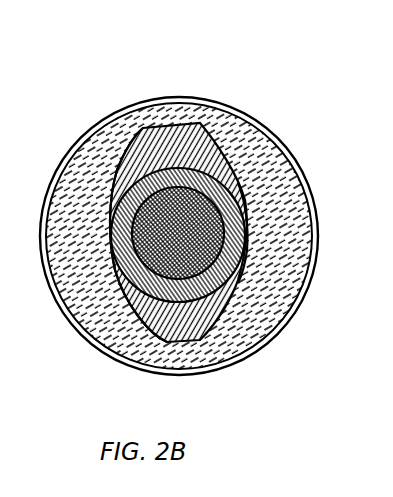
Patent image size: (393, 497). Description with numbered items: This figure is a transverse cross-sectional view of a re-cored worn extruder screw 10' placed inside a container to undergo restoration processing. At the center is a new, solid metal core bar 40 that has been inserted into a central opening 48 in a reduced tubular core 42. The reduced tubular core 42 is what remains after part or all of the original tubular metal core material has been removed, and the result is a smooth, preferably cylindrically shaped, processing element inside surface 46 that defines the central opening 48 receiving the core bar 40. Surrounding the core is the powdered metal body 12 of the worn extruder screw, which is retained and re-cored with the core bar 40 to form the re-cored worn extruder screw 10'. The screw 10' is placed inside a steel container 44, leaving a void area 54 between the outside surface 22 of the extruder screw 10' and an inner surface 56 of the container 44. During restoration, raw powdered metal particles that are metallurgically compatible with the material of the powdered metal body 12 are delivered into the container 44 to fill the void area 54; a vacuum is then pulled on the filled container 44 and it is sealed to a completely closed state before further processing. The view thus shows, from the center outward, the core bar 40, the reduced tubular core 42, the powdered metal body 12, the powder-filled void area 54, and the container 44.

The re-cored worn extruder screw 10' is at (197, 225).
The powdered metal body 12 is at (140, 160).
The outside surface 22 is at (149, 140).
The solid metal core bar 40 is at (113, 298).
The reduced tubular core 42 is at (237, 248).
The steel container 44 is at (203, 97).
The processing element inside surface 46 is at (222, 188).
The central opening 48 is at (224, 218).
The void area 54 is at (70, 285).
The inner surface 56 is at (197, 358).